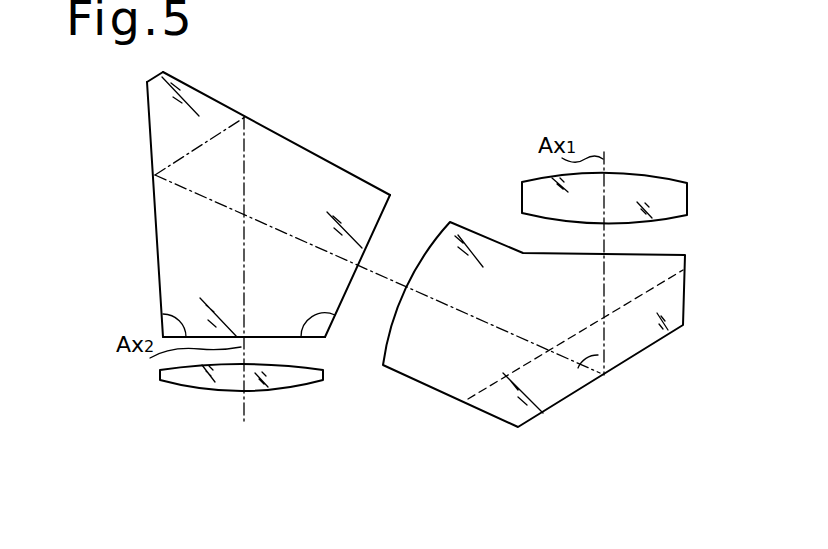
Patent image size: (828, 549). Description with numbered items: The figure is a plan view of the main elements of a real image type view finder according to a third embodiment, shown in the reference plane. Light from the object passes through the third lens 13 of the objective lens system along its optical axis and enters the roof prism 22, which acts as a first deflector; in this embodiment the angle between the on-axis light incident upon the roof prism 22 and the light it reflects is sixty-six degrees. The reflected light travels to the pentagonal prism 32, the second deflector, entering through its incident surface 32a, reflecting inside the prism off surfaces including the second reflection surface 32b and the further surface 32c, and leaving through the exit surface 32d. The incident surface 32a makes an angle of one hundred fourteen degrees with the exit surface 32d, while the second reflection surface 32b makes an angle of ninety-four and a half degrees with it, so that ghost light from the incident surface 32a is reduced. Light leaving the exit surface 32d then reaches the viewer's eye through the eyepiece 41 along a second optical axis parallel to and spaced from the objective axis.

The third lens 13 is at (657, 200).
The roof prism 22 is at (628, 360).
The pentagonal prism 32 is at (269, 234).
The incident surface 32a is at (378, 222).
The second reflection surface 32b is at (155, 240).
The prism surface 32c is at (327, 158).
The exit surface 32d is at (283, 338).
The eyepiece 41 is at (282, 385).